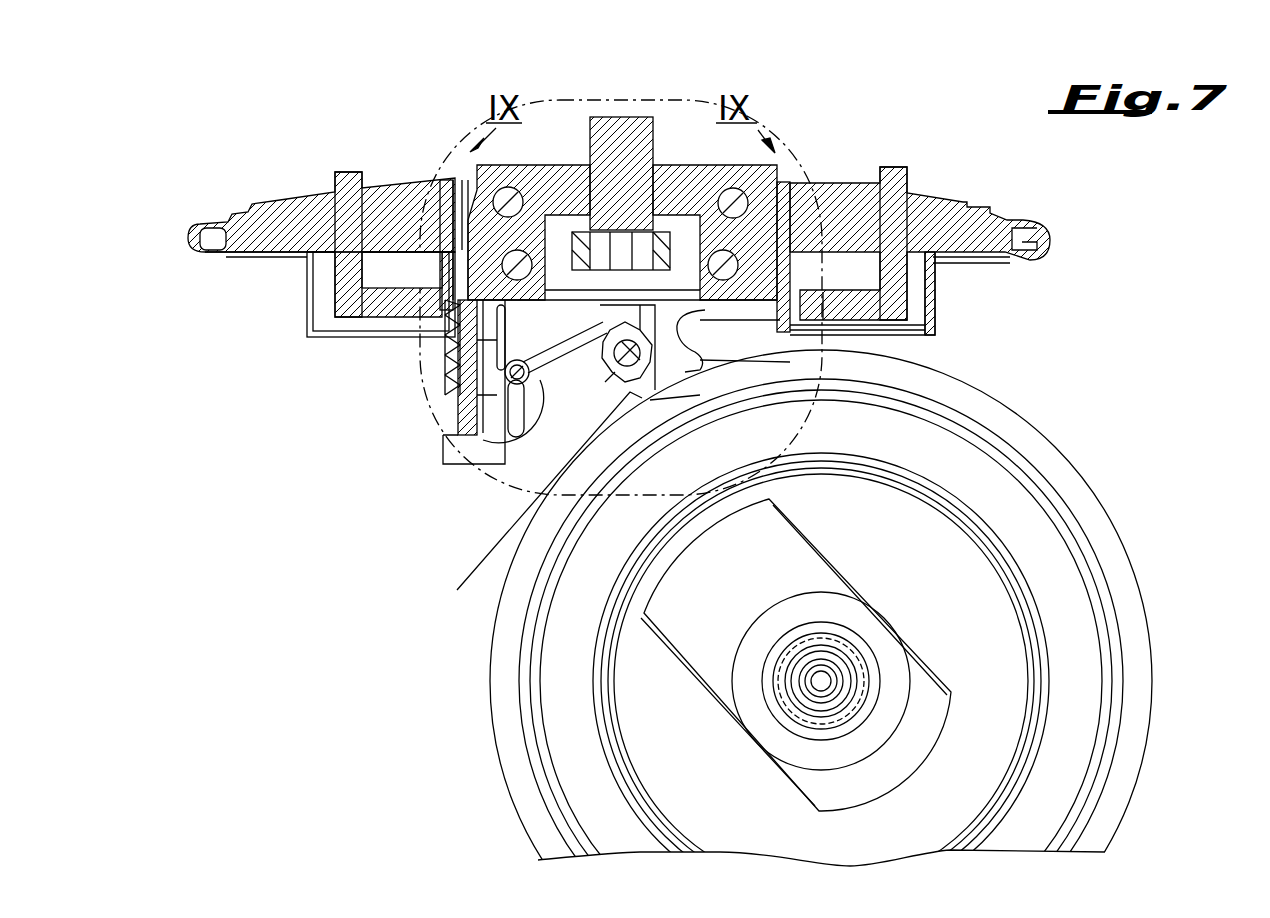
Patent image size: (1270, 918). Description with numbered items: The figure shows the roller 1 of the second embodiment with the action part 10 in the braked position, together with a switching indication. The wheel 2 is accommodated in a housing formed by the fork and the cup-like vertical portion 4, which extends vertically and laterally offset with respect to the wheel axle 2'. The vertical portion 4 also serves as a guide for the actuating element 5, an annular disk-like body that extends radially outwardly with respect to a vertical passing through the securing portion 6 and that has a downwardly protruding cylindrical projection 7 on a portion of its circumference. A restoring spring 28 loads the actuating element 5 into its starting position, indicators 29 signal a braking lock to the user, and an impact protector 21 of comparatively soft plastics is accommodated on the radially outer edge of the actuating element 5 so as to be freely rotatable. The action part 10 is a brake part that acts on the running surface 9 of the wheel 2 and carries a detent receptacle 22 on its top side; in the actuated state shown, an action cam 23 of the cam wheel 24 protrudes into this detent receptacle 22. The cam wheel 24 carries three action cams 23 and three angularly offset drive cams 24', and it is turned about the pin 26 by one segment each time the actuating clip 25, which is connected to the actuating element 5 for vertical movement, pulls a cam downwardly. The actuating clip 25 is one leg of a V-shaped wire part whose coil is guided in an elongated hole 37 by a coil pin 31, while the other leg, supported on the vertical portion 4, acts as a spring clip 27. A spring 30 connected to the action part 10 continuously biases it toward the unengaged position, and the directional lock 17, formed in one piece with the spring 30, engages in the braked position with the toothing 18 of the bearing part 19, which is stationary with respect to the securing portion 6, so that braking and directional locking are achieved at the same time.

The roller 1 is at (222, 155).
The wheel 2 is at (839, 634).
The wheel axle 2' is at (929, 664).
The vertical portion 4 is at (467, 368).
The actuating element 5 is at (953, 210).
The securing portion 6 is at (553, 165).
The cylindrical projection 7 is at (448, 262).
The running surface 9 is at (1148, 610).
The action part 10 is at (760, 368).
The directional lock 17 is at (800, 300).
The toothing 18 is at (760, 250).
The bearing part 19 is at (462, 230).
The impact protector 21 is at (705, 340).
The detent receptacle 22 is at (690, 402).
The action cam 23 is at (530, 493).
The cam wheel 24 is at (656, 214).
The drive cam 24' is at (521, 439).
The actuating clip 25 is at (567, 290).
The pin 26 is at (757, 175).
The spring clip 27 is at (498, 340).
The restoring spring 28 is at (445, 320).
The indicators 29 is at (345, 180).
The spring 30 is at (817, 336).
The coil pin 31 is at (612, 308).
The elongated hole 37 is at (502, 405).